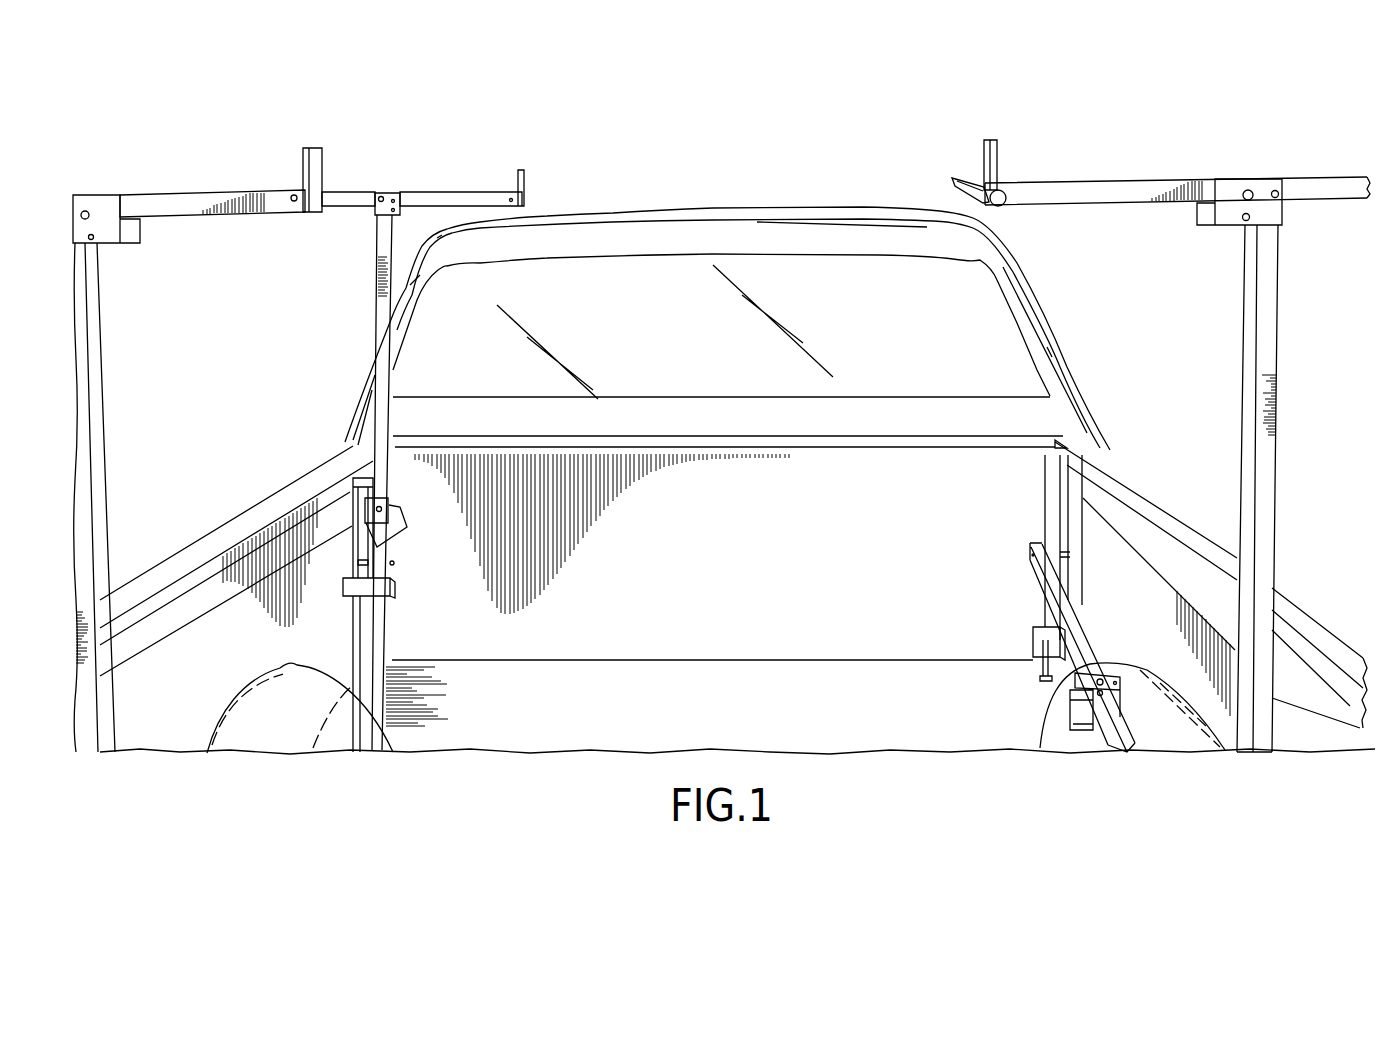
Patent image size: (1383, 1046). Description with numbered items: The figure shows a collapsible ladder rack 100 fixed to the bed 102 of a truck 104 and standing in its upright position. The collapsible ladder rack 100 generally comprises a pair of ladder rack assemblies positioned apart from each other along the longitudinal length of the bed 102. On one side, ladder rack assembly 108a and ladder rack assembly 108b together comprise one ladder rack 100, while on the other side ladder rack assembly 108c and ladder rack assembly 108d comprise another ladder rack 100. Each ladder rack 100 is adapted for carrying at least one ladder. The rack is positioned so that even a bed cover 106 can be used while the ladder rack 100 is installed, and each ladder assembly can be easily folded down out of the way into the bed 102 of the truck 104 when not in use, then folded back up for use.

The collapsible ladder rack 100 is at (137, 156).
The bed 102 is at (931, 543).
The truck 104 is at (797, 205).
The bed cover 106 is at (970, 413).
The ladder rack assembly 108a is at (173, 205).
The ladder rack assembly 108b is at (410, 198).
The ladder rack assembly 108c is at (1098, 190).
The ladder rack assembly 108d is at (1075, 608).